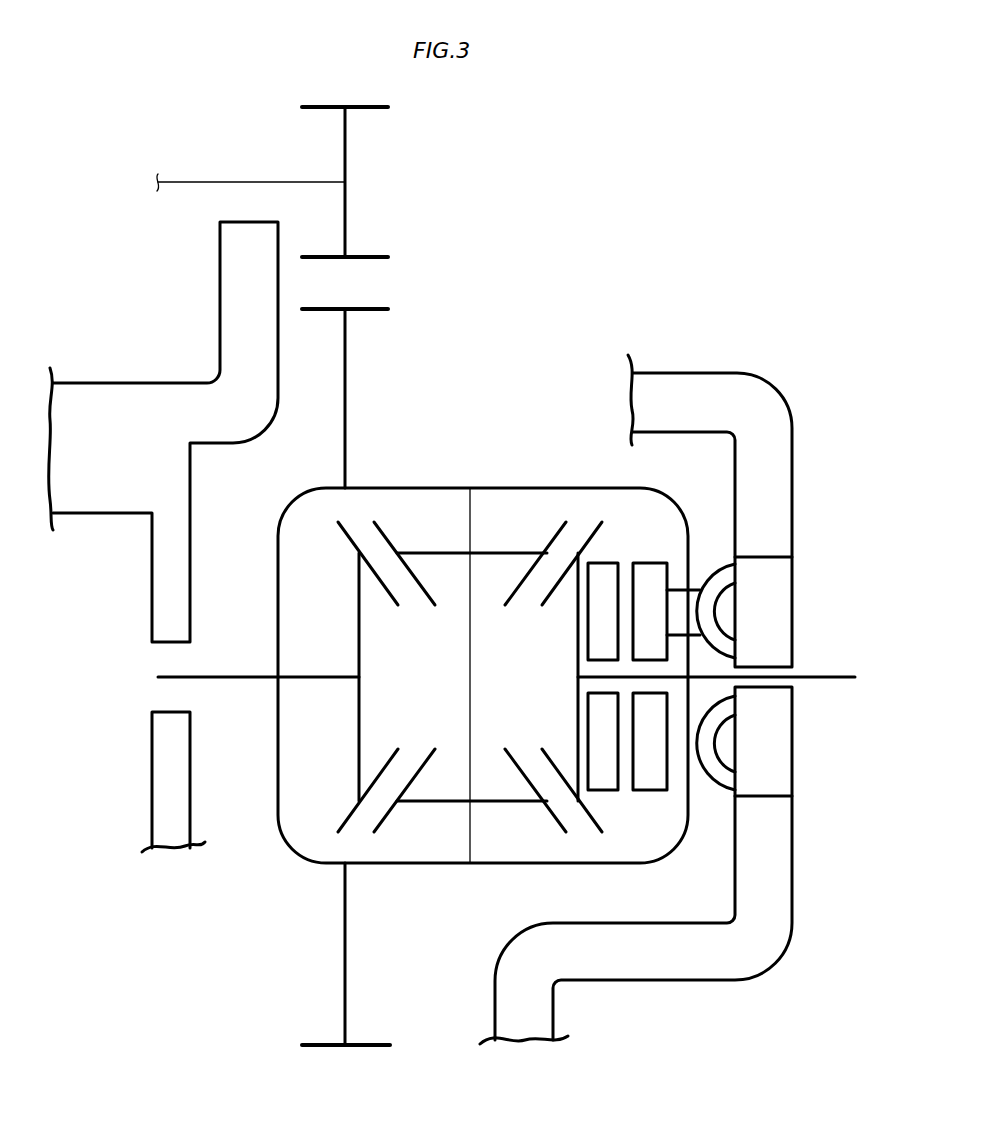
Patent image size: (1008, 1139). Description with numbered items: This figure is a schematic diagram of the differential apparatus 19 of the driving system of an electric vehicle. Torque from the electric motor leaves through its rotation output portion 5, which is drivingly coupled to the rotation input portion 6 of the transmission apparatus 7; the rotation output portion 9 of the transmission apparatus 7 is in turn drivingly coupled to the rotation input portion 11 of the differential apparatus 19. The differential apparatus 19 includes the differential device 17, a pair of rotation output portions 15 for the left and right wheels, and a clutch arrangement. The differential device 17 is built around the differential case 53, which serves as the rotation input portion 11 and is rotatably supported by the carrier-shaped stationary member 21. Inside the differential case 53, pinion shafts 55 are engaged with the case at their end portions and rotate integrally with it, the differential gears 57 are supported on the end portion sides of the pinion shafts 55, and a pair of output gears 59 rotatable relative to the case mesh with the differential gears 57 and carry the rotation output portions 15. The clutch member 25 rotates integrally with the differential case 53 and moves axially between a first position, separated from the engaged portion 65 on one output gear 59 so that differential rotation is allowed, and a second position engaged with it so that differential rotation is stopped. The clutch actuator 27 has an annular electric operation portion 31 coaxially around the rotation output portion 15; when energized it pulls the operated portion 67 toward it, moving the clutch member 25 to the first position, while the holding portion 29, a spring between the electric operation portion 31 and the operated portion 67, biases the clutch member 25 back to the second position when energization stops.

The rotation output portion 5 is at (253, 182).
The rotation input portion 6 is at (347, 157).
The transmission apparatus 7 is at (395, 235).
The rotation output portion 9 is at (347, 385).
The rotation input portion 11 is at (393, 488).
The rotation output portions 15 is at (215, 678).
The differential device 17 is at (518, 525).
The differential apparatus 19 is at (500, 398).
The stationary member 21 is at (130, 383).
The clutch member 25 is at (651, 792).
The clutch actuator 27 is at (772, 533).
The holding portion 29 is at (713, 800).
The electric operation portion 31 is at (793, 608).
The differential case 53 is at (297, 852).
The pinion shafts 55 is at (472, 705).
The differential gears 57 is at (394, 840).
The output gears 59 is at (349, 538).
The engaged portion 65 is at (585, 645).
The operated portion 67 is at (680, 580).